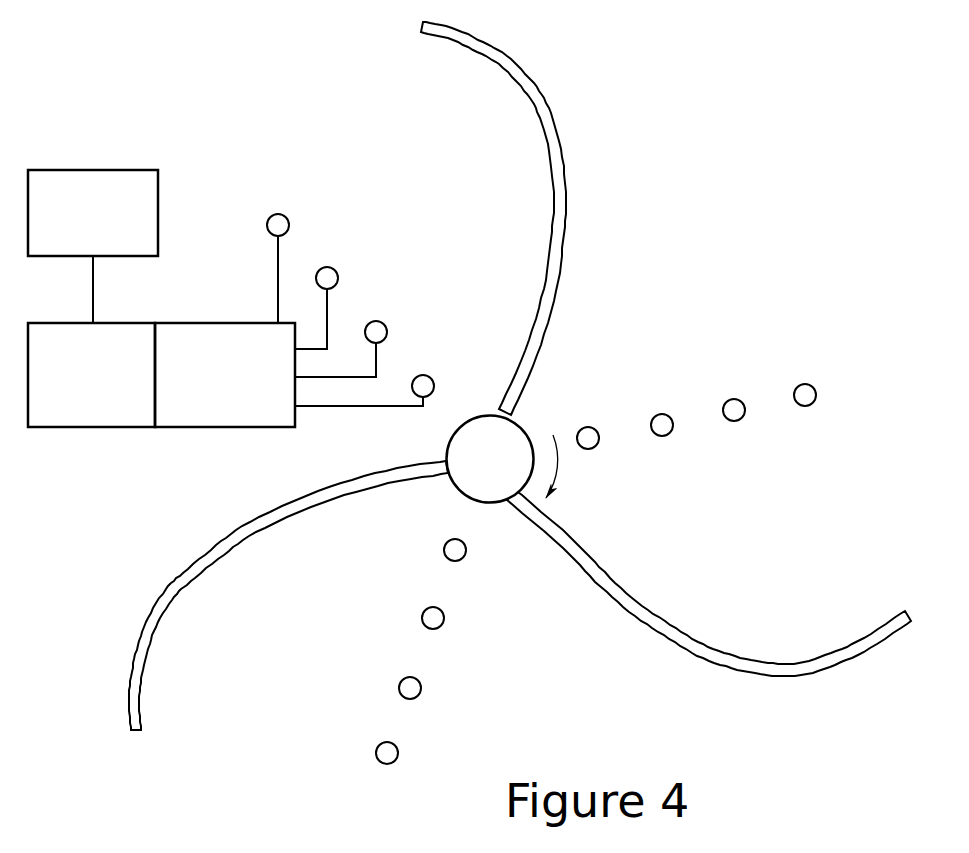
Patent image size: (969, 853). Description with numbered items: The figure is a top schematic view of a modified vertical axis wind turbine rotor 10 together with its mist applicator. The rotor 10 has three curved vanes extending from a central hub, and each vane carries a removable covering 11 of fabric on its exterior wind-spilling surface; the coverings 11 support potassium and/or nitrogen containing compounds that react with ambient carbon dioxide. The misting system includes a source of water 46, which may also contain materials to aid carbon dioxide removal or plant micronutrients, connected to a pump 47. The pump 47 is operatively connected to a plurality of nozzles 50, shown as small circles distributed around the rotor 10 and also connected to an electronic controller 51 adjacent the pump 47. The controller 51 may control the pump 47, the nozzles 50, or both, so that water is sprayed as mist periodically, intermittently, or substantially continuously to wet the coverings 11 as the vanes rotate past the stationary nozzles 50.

The VAWT rotor 10 is at (768, 258).
The removable coverings 11 is at (550, 290).
The source of water 46 is at (60, 172).
The pump 47 is at (77, 417).
The nozzles 50 is at (425, 335).
The electronic controller 51 is at (190, 323).